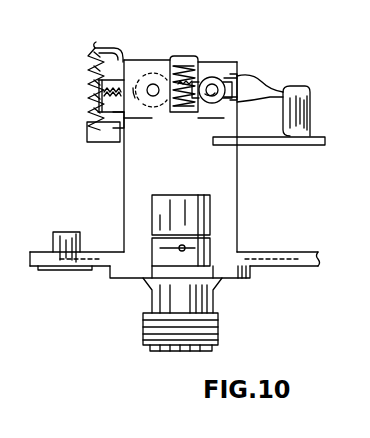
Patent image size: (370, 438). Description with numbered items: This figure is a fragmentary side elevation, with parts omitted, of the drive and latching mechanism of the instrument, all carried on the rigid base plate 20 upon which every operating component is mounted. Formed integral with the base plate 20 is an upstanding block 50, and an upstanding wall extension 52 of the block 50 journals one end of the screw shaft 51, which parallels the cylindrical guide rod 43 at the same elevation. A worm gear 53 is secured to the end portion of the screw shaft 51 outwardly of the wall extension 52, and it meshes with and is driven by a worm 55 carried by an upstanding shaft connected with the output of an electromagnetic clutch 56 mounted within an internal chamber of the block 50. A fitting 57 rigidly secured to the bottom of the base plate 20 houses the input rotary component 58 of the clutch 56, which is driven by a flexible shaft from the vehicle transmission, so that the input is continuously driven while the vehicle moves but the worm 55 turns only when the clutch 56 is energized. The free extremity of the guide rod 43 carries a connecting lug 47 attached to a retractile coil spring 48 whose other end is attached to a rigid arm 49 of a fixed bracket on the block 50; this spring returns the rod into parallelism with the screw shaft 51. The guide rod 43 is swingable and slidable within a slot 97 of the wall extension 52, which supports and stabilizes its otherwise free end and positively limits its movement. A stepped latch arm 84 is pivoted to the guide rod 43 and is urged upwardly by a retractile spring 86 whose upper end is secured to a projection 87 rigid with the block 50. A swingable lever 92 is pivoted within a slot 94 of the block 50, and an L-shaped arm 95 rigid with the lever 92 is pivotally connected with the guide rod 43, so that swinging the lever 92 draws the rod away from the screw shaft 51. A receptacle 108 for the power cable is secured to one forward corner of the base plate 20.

The base plate 20 is at (296, 266).
The guide rod 43 is at (212, 95).
The connecting lug 47 is at (206, 78).
The retractile coil spring 48 is at (100, 105).
The rigid arm 49 is at (98, 92).
The upstanding block 50 is at (124, 176).
The screw shaft 51 is at (154, 85).
The wall extension 52 is at (140, 60).
The worm gear 53 is at (156, 102).
The worm 55 is at (185, 60).
The electromagnetic clutch 56 is at (210, 218).
The fitting 57 is at (143, 330).
The input rotary component 58 is at (152, 270).
The stepped latch arm 84 is at (100, 136).
The retractile spring 86 is at (92, 76).
The projection 87 is at (95, 48).
The swingable lever 92 is at (283, 142).
The slot 94 is at (232, 137).
The L-shaped arm 95 is at (250, 82).
The slot 97 is at (234, 72).
The receptacle 108 is at (60, 266).